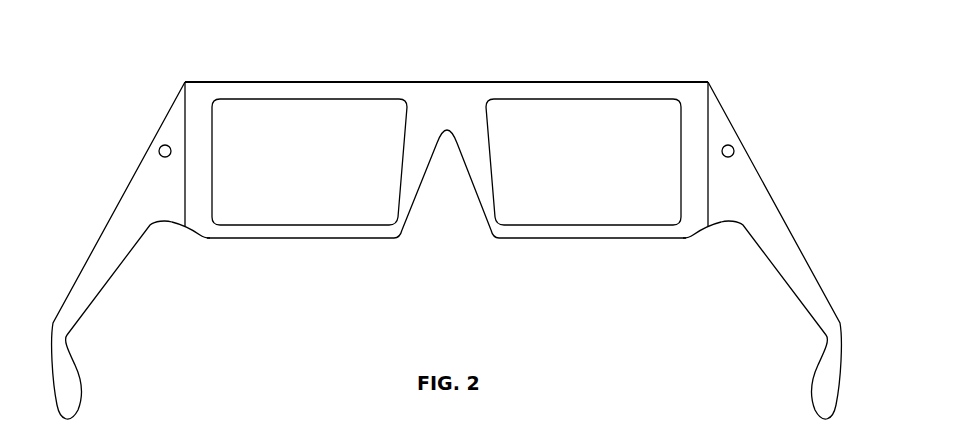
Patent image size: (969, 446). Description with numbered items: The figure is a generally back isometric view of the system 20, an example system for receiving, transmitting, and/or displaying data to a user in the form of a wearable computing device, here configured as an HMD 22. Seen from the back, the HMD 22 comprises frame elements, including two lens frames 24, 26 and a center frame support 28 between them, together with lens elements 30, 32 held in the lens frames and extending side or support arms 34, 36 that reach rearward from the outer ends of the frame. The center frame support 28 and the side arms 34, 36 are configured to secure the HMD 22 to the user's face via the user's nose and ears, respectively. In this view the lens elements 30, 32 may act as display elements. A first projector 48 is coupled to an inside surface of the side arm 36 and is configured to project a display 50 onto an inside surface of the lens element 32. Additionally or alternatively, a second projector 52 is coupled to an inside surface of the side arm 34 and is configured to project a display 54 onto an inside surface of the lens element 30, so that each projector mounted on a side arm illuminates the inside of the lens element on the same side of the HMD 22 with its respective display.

The system 20 is at (673, 340).
The HMD 22 is at (237, 68).
The lens frame 24 is at (610, 238).
The lens frame 26 is at (233, 238).
The center frame support 28 is at (447, 82).
The lens element 30 is at (550, 217).
The lens element 32 is at (325, 217).
The side arm 34 is at (760, 188).
The side arm 36 is at (108, 220).
The first projector 48 is at (159, 151).
The display 50 is at (237, 131).
The second projector 52 is at (727, 144).
The display 54 is at (640, 133).